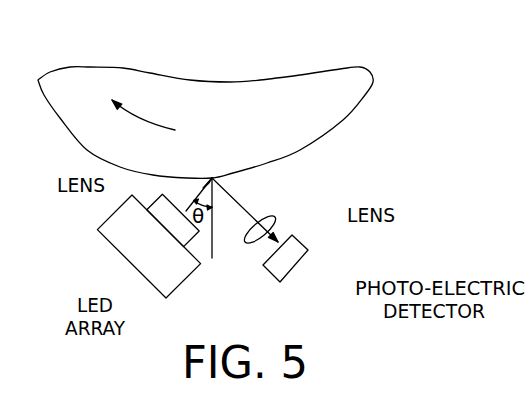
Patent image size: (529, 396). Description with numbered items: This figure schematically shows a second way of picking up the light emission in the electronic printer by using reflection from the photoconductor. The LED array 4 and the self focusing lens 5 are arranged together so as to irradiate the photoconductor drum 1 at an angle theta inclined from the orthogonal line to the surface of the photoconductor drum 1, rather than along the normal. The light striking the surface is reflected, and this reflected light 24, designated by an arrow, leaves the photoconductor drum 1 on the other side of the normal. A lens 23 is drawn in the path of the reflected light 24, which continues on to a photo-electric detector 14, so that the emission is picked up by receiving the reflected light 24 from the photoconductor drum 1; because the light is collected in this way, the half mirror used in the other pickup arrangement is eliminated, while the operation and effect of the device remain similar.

The photoconductor drum 1 is at (60, 113).
The LED array 4 is at (137, 272).
The self focusing lens 5 is at (155, 202).
The reflected light 24 is at (264, 202).
The lens 23 is at (273, 223).
The photo-electric detector 14 is at (297, 262).